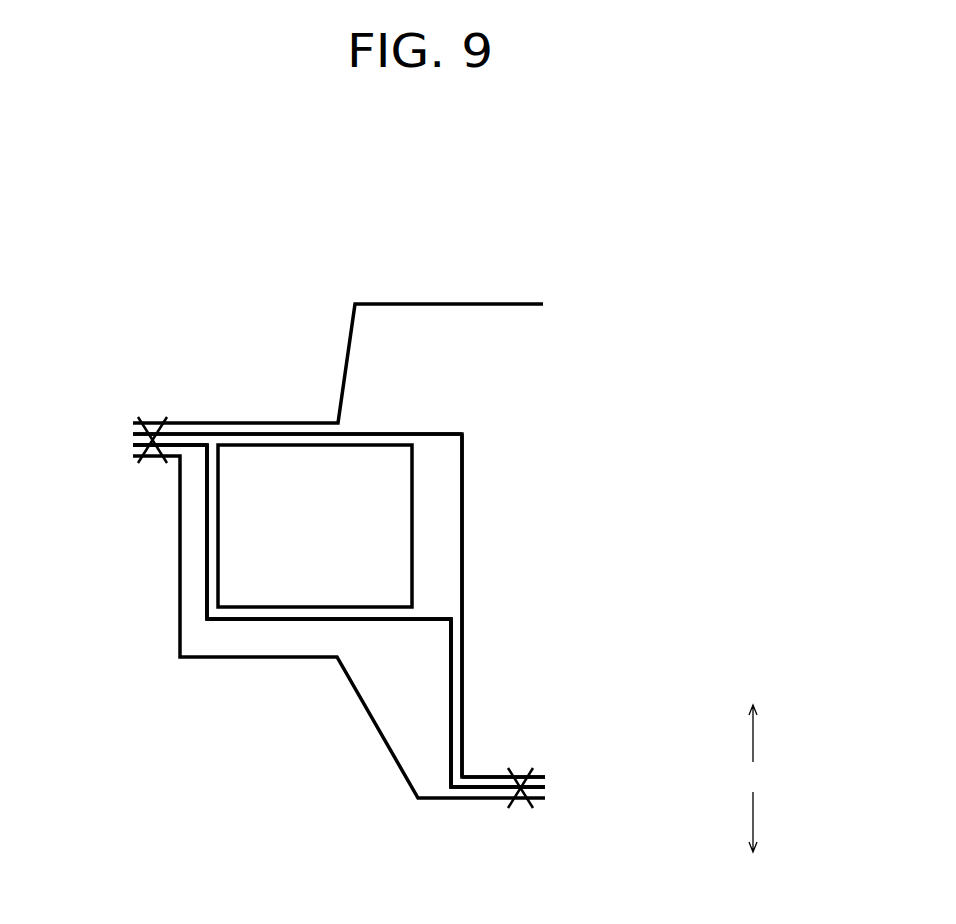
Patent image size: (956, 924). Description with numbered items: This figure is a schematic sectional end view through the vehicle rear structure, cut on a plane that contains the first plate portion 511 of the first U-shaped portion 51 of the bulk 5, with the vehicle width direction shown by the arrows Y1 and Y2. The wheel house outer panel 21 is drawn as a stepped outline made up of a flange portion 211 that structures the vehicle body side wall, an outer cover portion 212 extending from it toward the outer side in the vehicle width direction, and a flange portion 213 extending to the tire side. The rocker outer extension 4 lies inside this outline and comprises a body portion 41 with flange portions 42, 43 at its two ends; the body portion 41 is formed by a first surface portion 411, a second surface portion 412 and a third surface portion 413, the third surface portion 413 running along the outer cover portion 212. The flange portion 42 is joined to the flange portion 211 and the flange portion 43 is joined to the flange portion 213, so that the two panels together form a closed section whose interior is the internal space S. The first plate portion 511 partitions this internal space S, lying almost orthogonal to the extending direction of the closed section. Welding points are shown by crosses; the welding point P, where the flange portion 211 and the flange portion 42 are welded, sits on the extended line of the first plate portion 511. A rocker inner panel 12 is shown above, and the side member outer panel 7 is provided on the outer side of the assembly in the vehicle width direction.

The rocker inner panel 12 is at (517, 303).
The wheel house outer panel 21 is at (463, 485).
The flange portion 211 is at (445, 433).
The outer cover portion 212 is at (463, 565).
The flange portion 213 is at (488, 773).
The bulk 5 is at (372, 443).
The first plate portion 511 is at (267, 470).
The first U-shaped portion 51 is at (315, 526).
The rocker outer extension 4 is at (411, 622).
The body portion 41 is at (363, 622).
The first surface portion 411 is at (283, 620).
The second surface portion 412 is at (207, 573).
The third surface portion 413 is at (450, 753).
The flange portion 42 is at (193, 443).
The flange portion 43 is at (493, 800).
The side member outer panel 7 is at (198, 658).
The welding point P is at (150, 408).
The internal space S is at (433, 468).
The Y1 direction Y1 is at (772, 822).
The Y2 direction Y2 is at (772, 734).